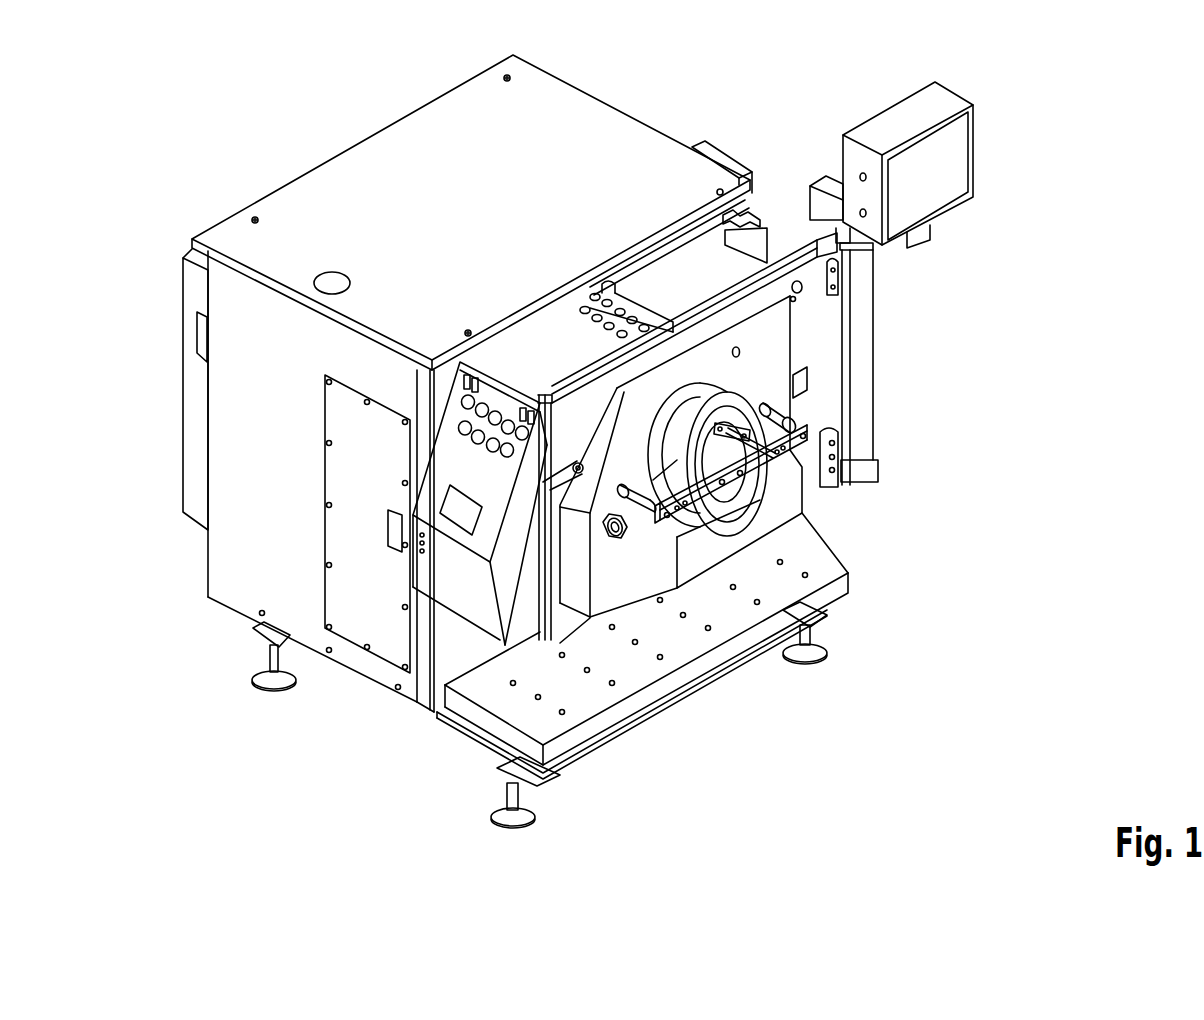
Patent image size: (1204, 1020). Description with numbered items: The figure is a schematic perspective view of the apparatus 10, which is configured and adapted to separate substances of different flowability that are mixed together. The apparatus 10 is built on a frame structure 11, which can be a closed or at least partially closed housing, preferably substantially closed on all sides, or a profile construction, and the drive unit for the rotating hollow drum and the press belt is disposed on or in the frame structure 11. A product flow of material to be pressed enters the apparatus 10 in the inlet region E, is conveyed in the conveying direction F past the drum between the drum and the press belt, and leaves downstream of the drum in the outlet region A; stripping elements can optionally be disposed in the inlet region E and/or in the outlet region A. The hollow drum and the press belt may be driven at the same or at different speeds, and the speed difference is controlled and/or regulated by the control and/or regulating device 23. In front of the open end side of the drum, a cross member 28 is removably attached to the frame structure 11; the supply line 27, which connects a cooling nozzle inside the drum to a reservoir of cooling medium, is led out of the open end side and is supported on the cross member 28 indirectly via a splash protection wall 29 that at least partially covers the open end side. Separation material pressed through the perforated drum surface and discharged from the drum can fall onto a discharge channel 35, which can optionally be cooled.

The apparatus 10 is at (535, 441).
The frame structure 11 is at (220, 463).
The control and/or regulating device 23 is at (922, 200).
The supply line 27 is at (838, 445).
The cross member 28 is at (700, 493).
The splash protection wall 29 is at (622, 510).
The discharge channel 35 is at (793, 510).
The inlet region E is at (740, 272).
The conveying direction F is at (467, 563).
The outlet region A is at (448, 652).